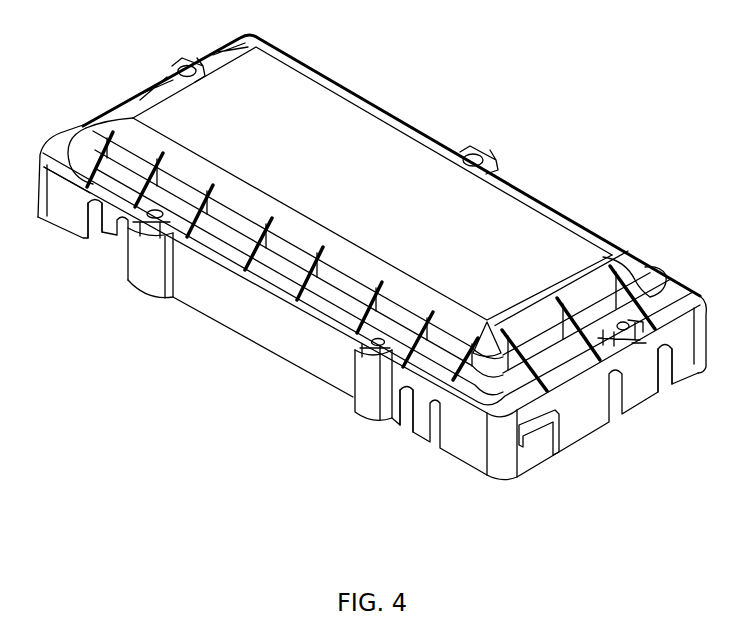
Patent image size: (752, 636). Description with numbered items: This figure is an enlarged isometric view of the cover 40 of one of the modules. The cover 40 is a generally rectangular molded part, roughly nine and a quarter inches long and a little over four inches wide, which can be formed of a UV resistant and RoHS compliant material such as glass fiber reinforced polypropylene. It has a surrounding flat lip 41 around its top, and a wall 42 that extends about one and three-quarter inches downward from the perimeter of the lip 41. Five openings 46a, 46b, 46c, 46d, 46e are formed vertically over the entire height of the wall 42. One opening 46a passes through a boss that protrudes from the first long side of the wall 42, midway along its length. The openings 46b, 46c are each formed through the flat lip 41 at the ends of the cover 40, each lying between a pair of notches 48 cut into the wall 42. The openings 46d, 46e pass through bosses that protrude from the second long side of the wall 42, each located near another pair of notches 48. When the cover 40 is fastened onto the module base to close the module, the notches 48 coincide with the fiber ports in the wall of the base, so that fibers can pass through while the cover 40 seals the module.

The cover 40 is at (560, 205).
The flat lip 41 is at (57, 147).
The wall 42 is at (275, 345).
The opening 46a is at (480, 150).
The opening 46b is at (185, 65).
The opening 46c is at (655, 345).
The opening 46d is at (160, 250).
The opening 46e is at (380, 355).
The notches 48 is at (127, 237).